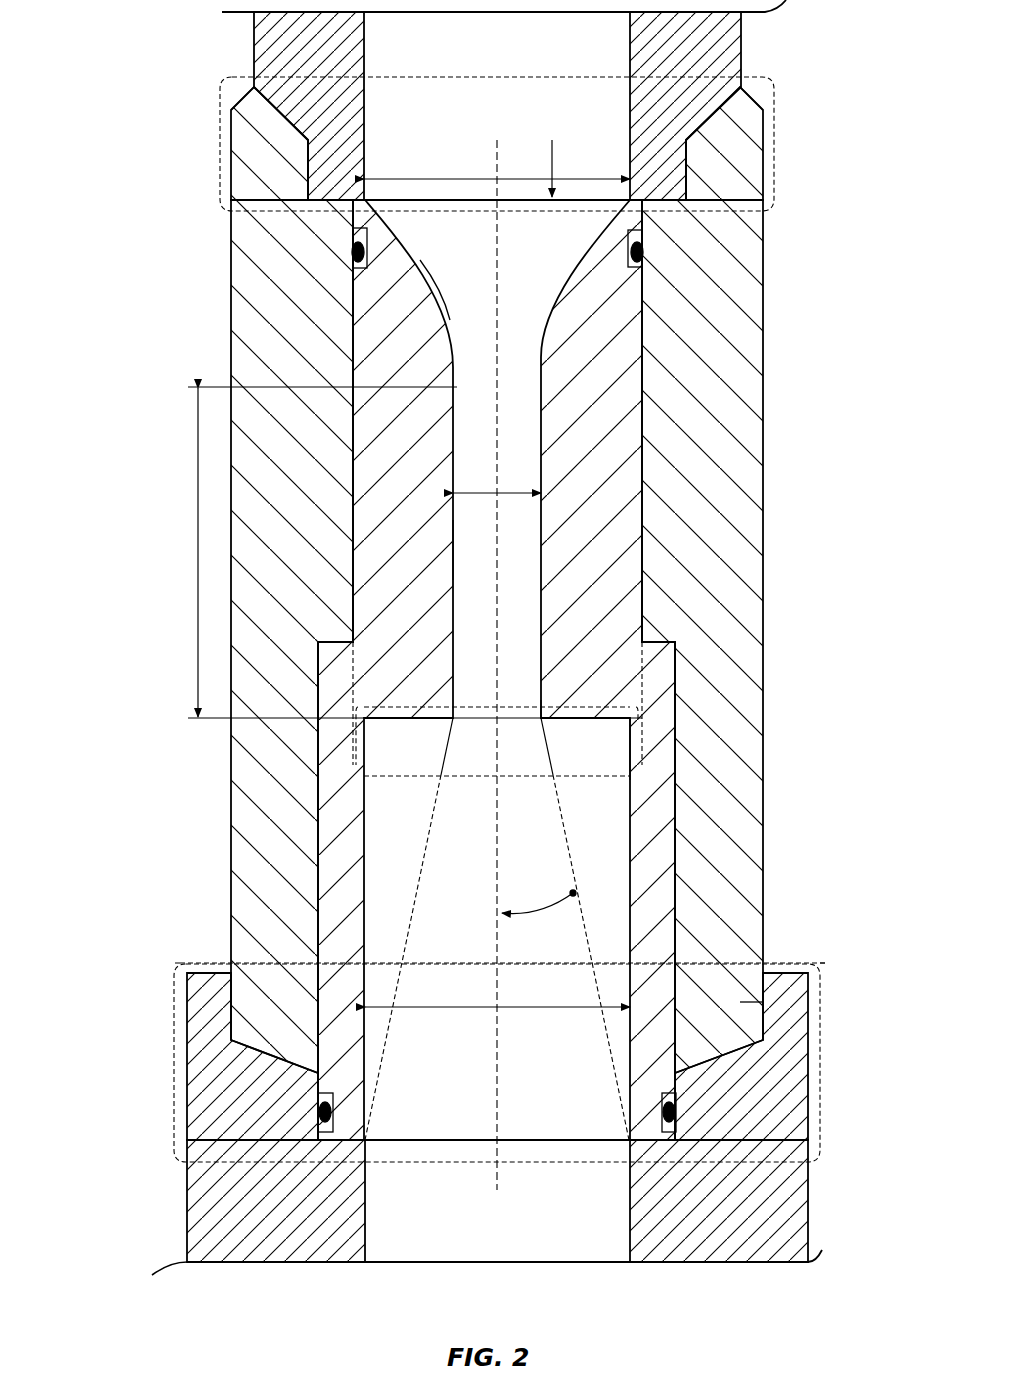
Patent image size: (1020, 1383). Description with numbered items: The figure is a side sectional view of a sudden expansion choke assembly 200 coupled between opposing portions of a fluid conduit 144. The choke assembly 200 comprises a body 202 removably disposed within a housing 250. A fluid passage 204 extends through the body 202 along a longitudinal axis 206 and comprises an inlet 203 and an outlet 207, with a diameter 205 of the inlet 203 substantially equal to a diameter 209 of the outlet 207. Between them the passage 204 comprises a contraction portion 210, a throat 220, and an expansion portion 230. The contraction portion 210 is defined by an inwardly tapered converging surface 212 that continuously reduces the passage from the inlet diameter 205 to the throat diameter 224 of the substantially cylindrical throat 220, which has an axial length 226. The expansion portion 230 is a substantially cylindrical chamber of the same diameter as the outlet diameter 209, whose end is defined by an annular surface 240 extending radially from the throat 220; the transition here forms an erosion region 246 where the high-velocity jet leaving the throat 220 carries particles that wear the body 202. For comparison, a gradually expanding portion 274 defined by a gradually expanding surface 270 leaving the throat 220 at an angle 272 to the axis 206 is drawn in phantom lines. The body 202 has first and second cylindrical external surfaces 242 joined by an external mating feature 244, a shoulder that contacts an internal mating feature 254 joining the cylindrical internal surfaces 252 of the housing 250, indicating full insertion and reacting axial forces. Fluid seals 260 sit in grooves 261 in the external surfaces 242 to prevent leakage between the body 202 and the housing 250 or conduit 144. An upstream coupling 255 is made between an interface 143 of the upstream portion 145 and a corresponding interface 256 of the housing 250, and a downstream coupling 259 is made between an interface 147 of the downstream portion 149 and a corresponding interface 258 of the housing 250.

The choke assembly 200 is at (92, 72).
The upstream portion of the fluid conduit 145 is at (252, 45).
The fluid conduit 144 is at (770, 44).
The upstream coupling 255 is at (245, 135).
The interface of the housing 256 is at (727, 135).
The inlet diameter 205 is at (364, 154).
The longitudinal axis 206 is at (496, 157).
The inlet 203 is at (565, 122).
The interface of the upstream portion 143 is at (663, 167).
The groove 261 is at (352, 247).
The fluid seal 260 is at (637, 252).
The contraction portion 210 is at (353, 262).
The converging surface 212 is at (437, 283).
The housing 250 is at (763, 345).
The axial length of the throat 226 is at (198, 430).
The throat diameter 224 is at (458, 490).
The throat 220 is at (477, 553).
The body 202 is at (610, 540).
The internal surfaces of the housing 252 is at (355, 615).
The internal mating feature 254 is at (320, 683).
The external surfaces of the body 242 is at (673, 632).
The external mating feature 244 is at (660, 650).
The erosion region 246 is at (645, 745).
The annular surface 240 is at (612, 725).
The expansion portion 230 is at (393, 807).
The gradually expanding surface 270 is at (435, 908).
The gradually expanding portion 274 is at (430, 940).
The angle 272 is at (528, 950).
The outlet diameter 209 is at (760, 1000).
The downstream coupling 259 is at (186, 1062).
The interface of the housing 258 is at (740, 1002).
The interface of the downstream portion 147 is at (785, 1030).
The downstream portion of the fluid conduit 149 is at (740, 1207).
The outlet 207 is at (529, 1152).
The fluid passage 204 is at (577, 1125).